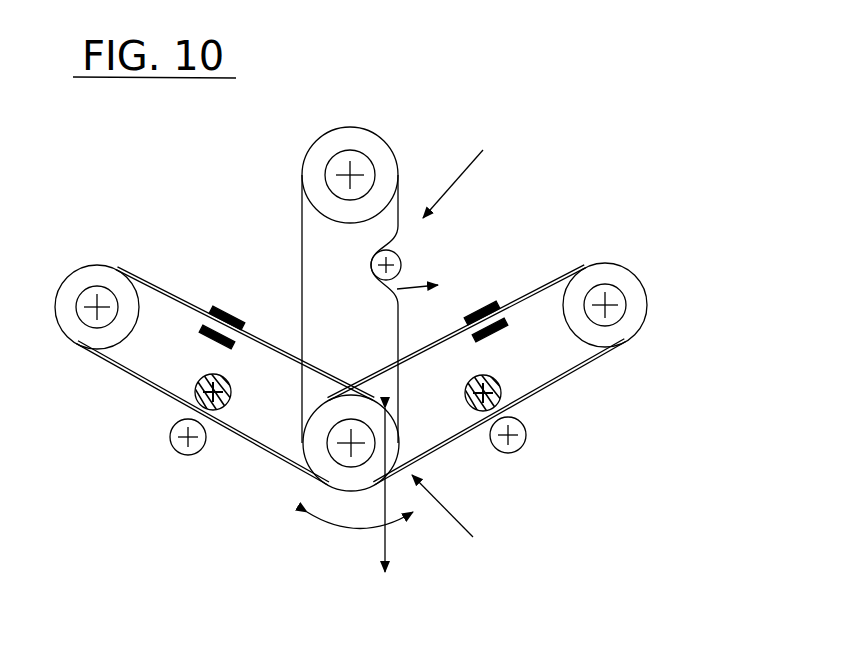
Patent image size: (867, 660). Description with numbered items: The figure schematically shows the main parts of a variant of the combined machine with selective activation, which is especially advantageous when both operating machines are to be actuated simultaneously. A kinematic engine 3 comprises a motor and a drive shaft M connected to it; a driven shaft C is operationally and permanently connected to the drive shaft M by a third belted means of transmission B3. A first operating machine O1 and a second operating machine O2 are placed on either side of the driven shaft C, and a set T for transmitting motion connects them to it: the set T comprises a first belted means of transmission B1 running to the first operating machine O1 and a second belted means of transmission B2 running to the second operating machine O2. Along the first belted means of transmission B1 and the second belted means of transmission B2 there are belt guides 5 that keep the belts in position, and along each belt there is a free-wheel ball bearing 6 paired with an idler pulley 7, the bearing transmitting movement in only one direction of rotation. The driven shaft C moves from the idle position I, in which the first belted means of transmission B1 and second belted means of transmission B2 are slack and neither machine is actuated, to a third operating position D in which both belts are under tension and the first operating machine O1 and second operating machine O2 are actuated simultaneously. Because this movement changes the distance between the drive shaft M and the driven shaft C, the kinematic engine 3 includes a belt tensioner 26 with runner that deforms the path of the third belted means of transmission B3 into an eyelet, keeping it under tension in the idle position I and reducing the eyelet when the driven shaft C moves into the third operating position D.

The drive shaft M is at (367, 168).
The driven shaft C is at (342, 457).
The third belted means of transmission B3 is at (302, 246).
The belt tensioner 26 is at (399, 258).
The kinematic engine 3 is at (463, 173).
The first operating machine O1 is at (62, 262).
The second operating machine O2 is at (641, 270).
The first belted means of transmission B1 is at (140, 380).
The second belted means of transmission B2 is at (562, 380).
The belt guide 5 is at (229, 312).
The free-wheel ball bearing 6 is at (225, 404).
The idler pulley 7 is at (188, 455).
The idle position I is at (360, 511).
The third operating position D is at (386, 510).
The set for transmitting motion T is at (452, 523).